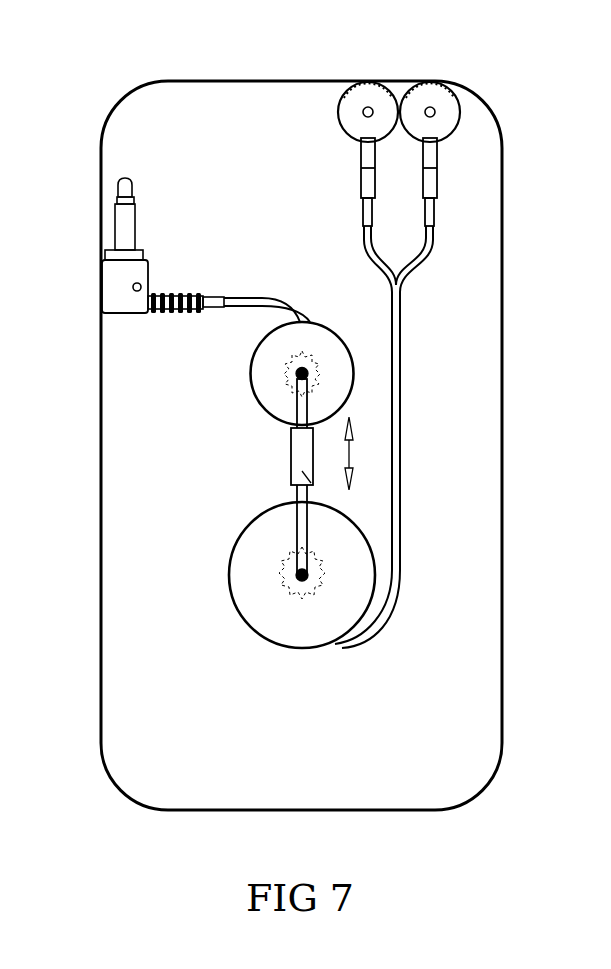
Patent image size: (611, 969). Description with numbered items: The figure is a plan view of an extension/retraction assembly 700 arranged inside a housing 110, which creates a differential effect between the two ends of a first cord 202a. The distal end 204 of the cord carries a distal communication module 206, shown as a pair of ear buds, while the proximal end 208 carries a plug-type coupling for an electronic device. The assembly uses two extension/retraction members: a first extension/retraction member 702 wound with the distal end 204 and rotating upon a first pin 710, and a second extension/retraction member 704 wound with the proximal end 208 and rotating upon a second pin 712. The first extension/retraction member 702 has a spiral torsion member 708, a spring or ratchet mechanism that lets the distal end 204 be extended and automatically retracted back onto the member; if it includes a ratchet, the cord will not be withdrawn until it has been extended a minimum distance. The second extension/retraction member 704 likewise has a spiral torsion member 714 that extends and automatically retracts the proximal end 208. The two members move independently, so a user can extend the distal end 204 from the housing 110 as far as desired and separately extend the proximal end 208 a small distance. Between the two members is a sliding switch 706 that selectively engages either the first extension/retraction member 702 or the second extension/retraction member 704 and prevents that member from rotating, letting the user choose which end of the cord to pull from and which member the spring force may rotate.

The housing 110 is at (276, 749).
The first cord 202a is at (293, 397).
The distal end 204 is at (423, 296).
The distal communication module 206 is at (436, 95).
The proximal end 208 is at (248, 256).
The extension/retraction assembly 700 is at (296, 510).
The first extension/retraction member 702 is at (205, 598).
The second extension/retraction member 704 is at (303, 382).
The sliding switch 706 is at (312, 485).
The spiral torsion member 708 is at (285, 553).
The first pin 710 is at (300, 576).
The second pin 712 is at (307, 378).
The spiral torsion member 714 is at (313, 355).